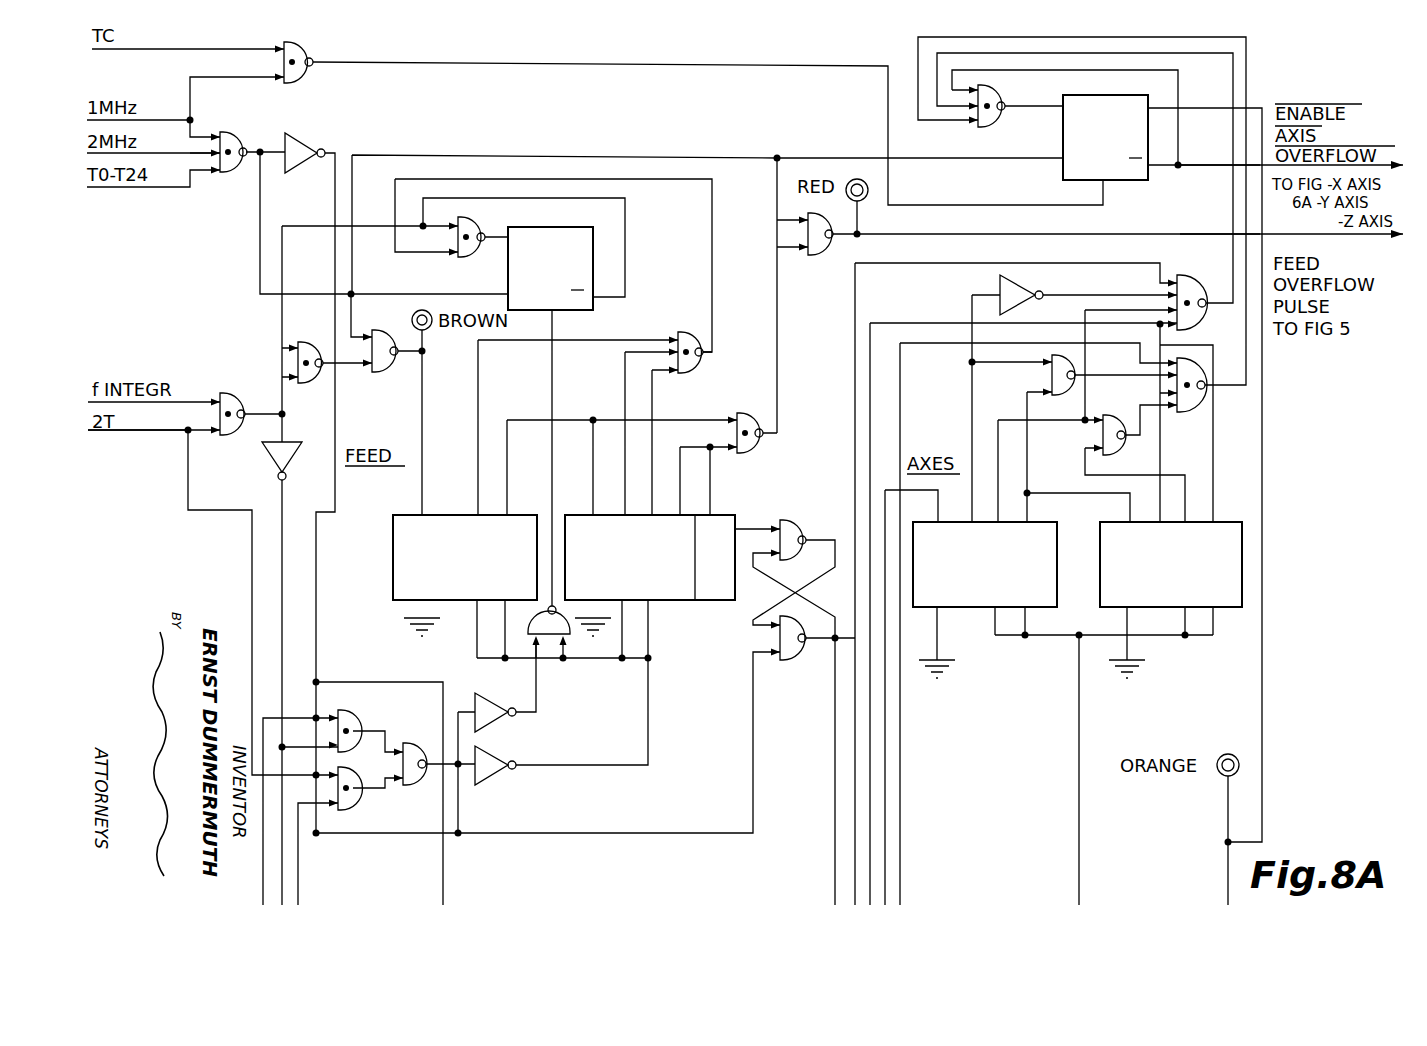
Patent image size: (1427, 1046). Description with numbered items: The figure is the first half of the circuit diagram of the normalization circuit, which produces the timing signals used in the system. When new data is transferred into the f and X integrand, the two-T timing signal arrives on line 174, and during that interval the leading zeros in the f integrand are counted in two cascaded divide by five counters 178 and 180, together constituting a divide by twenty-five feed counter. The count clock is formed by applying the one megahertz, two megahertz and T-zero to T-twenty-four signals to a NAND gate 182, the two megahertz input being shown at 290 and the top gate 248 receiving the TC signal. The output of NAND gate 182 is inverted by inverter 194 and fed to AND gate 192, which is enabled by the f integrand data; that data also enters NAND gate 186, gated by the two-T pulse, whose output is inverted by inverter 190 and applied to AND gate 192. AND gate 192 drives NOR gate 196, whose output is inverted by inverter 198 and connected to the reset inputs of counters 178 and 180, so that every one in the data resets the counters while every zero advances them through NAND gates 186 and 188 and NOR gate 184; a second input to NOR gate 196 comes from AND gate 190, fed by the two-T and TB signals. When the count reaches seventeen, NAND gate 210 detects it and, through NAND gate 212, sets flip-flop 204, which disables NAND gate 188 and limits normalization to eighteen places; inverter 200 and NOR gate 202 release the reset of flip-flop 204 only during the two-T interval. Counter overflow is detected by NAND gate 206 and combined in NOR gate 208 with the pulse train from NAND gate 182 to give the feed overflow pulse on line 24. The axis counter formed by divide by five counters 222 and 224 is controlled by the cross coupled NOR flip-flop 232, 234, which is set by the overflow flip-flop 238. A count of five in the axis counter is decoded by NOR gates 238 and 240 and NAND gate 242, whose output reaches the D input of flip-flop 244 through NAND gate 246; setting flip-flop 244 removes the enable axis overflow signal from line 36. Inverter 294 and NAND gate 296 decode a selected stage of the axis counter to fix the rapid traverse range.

The feed overflow pulse line 24 is at (1220, 244).
The enable axis overflow line 36 is at (1212, 170).
The 2T timing signal line 174 is at (172, 435).
The divide by five counter 178 is at (393, 575).
The divide by five counter 180 is at (684, 603).
The NAND gate 182 is at (232, 130).
The NOR gate 184 is at (385, 373).
The NAND gate 186 is at (228, 396).
The NAND gate 188 is at (308, 342).
The inverter / AND gate 190 is at (264, 448).
The AND gate 192 is at (350, 712).
The inverter 194 is at (297, 140).
The NOR gate 196 is at (414, 744).
The inverter 198 is at (487, 756).
The inverter 200 is at (481, 696).
The NOR gate 202 is at (568, 630).
The flip-flop 204 is at (567, 228).
The NAND gate 206 is at (752, 412).
The NOR gate 208 is at (827, 264).
The NAND gate 210 is at (694, 332).
The NAND gate 212 is at (478, 225).
The divide by five counter 222 is at (995, 637).
The divide by five counter 224 is at (1222, 610).
The NOR gate 232 is at (793, 662).
The NOR gate 234 is at (790, 520).
The overflow flip-flop / NOR gate 238 is at (1068, 398).
The NOR gate 240 is at (1106, 414).
The NAND gate 242 is at (1190, 414).
The flip-flop 244 is at (1105, 95).
The NAND gate 246 is at (997, 90).
The NAND gate 248 is at (300, 50).
The 2MHz input line 290 is at (194, 152).
The inverter 294 is at (1020, 276).
The NAND gate 296 is at (1190, 278).